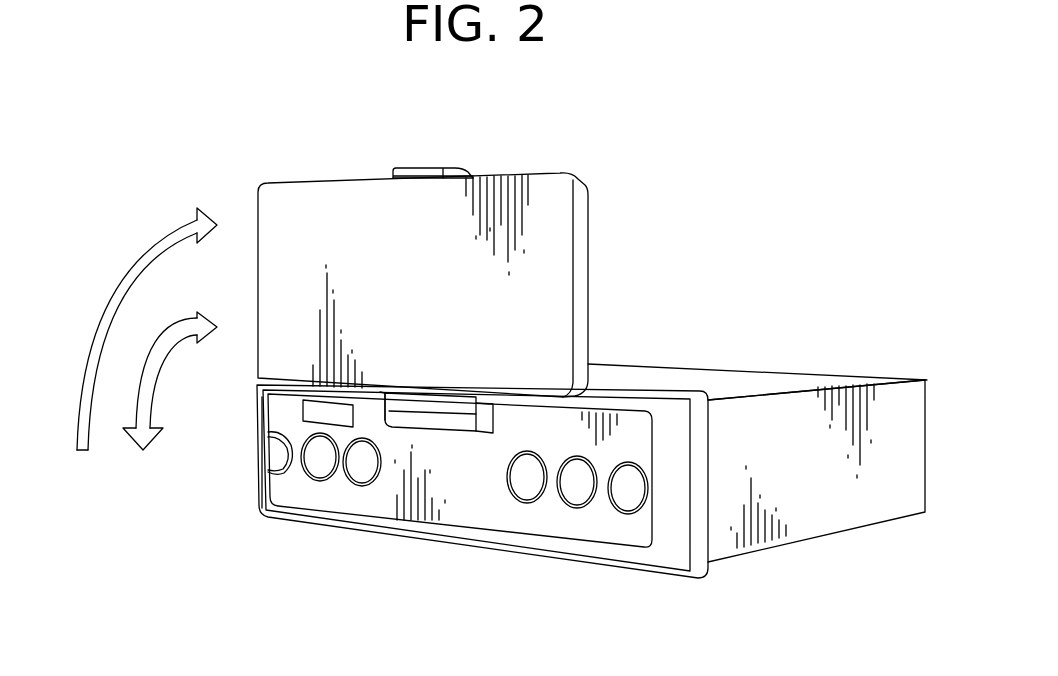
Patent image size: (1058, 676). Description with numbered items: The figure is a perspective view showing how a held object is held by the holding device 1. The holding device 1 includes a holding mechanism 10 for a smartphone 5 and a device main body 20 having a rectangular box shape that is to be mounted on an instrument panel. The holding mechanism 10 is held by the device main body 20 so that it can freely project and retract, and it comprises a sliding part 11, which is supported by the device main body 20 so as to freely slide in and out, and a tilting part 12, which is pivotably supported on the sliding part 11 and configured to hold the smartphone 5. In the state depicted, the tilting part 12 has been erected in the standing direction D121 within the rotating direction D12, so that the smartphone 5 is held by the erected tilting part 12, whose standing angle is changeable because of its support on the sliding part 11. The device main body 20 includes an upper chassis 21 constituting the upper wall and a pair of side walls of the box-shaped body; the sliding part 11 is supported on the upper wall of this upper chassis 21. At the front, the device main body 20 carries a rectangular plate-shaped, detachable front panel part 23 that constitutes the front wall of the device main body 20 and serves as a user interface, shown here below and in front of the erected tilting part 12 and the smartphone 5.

The holding device 1 is at (751, 183).
The smartphone 5 is at (300, 180).
The holding mechanism 10 is at (440, 165).
The sliding part 11 is at (478, 432).
The tilting part 12 is at (407, 168).
The device main body 20 is at (866, 376).
The upper chassis 21 is at (686, 368).
The front panel part 23 is at (427, 486).
The rotating direction D12 is at (160, 378).
The standing direction D121 is at (112, 290).